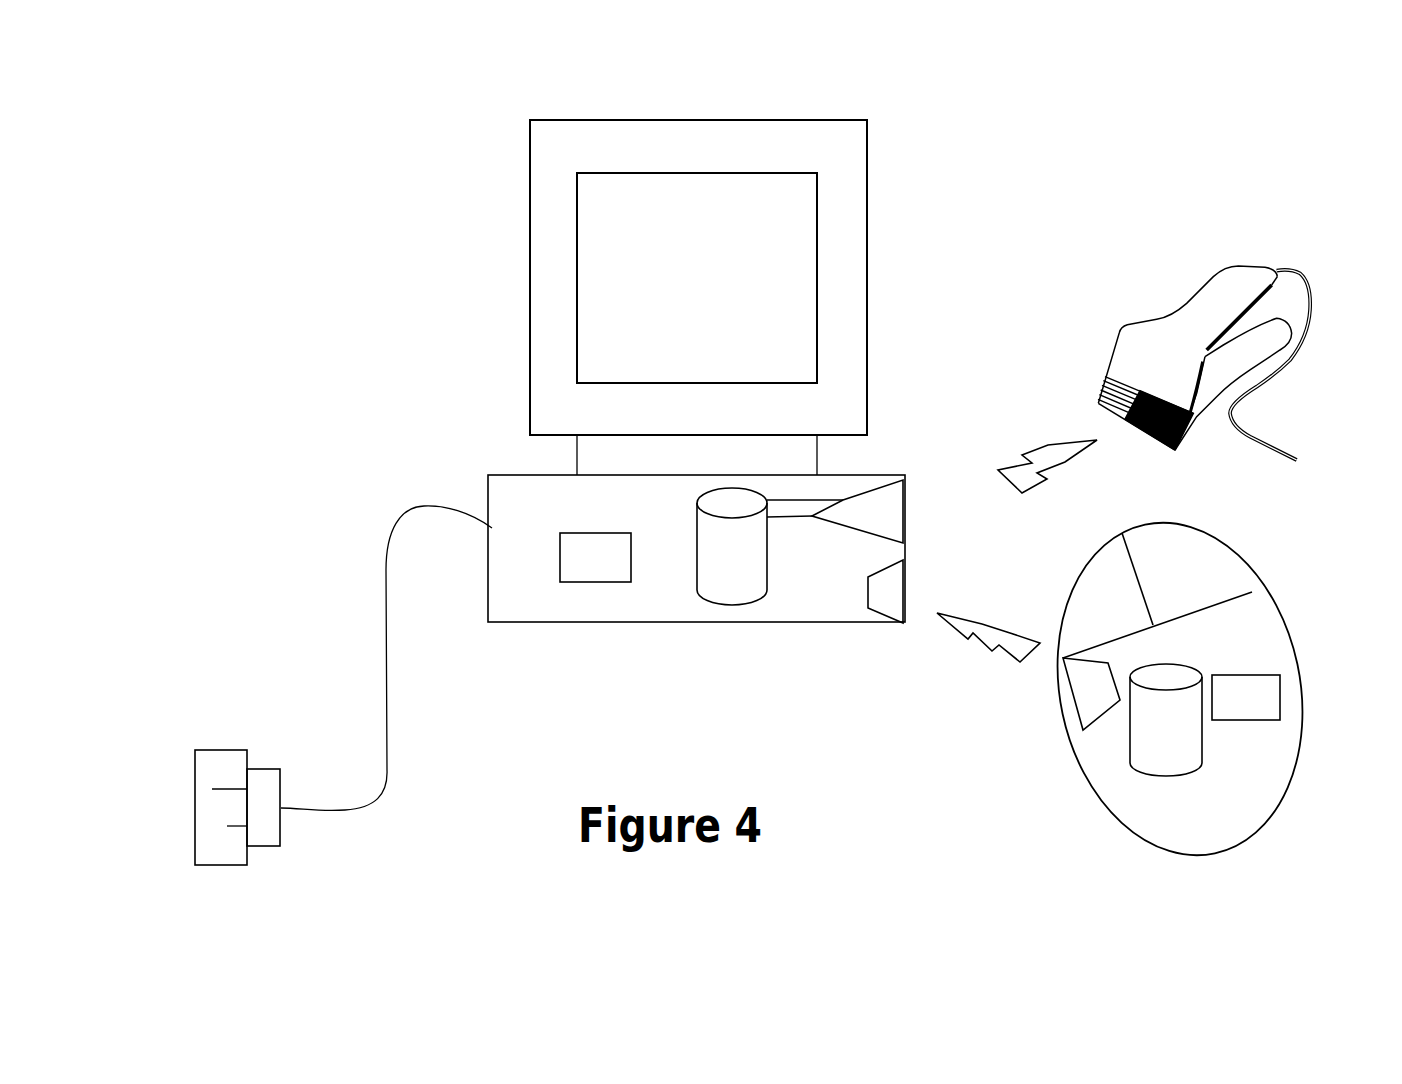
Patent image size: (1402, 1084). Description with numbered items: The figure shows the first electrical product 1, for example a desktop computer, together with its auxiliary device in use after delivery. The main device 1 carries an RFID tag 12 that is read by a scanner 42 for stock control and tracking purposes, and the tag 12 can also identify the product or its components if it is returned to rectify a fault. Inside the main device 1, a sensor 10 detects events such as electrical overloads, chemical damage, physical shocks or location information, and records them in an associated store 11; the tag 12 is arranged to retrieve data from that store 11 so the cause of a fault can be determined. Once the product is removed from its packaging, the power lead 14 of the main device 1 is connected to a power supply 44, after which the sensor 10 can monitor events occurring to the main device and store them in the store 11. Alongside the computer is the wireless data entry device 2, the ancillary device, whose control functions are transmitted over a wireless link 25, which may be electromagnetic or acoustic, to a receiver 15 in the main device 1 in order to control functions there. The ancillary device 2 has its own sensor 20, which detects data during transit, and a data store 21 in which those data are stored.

The first electrical product 1 is at (498, 480).
The sensor 10 is at (583, 582).
The store 11 is at (718, 608).
The RFID tag 12 is at (893, 485).
The receiver 15 is at (897, 623).
The power lead 14 is at (219, 740).
The power supply 44 is at (258, 755).
The scanner 42 is at (1222, 267).
The wireless data entry device 2 is at (1277, 628).
The sensor 20 is at (1282, 708).
The data store 21 is at (1157, 780).
The wireless link 25 is at (1083, 732).